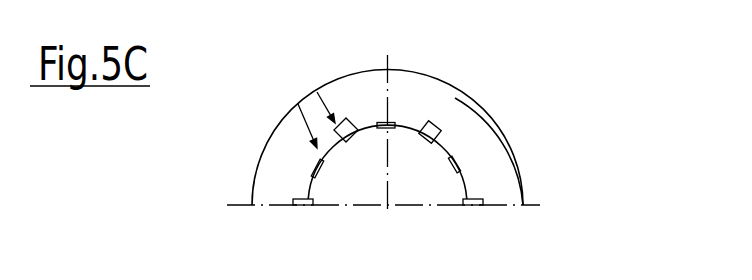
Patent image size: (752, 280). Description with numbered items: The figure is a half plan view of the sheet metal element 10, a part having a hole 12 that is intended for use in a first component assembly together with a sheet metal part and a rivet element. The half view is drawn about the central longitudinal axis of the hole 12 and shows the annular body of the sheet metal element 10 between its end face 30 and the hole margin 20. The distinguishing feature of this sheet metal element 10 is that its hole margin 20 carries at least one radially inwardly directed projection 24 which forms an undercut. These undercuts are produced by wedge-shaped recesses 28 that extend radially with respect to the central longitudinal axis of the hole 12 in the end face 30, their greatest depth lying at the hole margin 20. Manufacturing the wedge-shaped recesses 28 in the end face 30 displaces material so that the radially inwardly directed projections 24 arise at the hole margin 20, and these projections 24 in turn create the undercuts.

The sheet metal element 10 is at (485, 145).
The hole 12 is at (434, 191).
The hole margin 20 is at (445, 147).
The radially inwardly directed projection 24 is at (386, 123).
The wedge-shaped recess 28 is at (430, 122).
The end face 30 is at (503, 180).